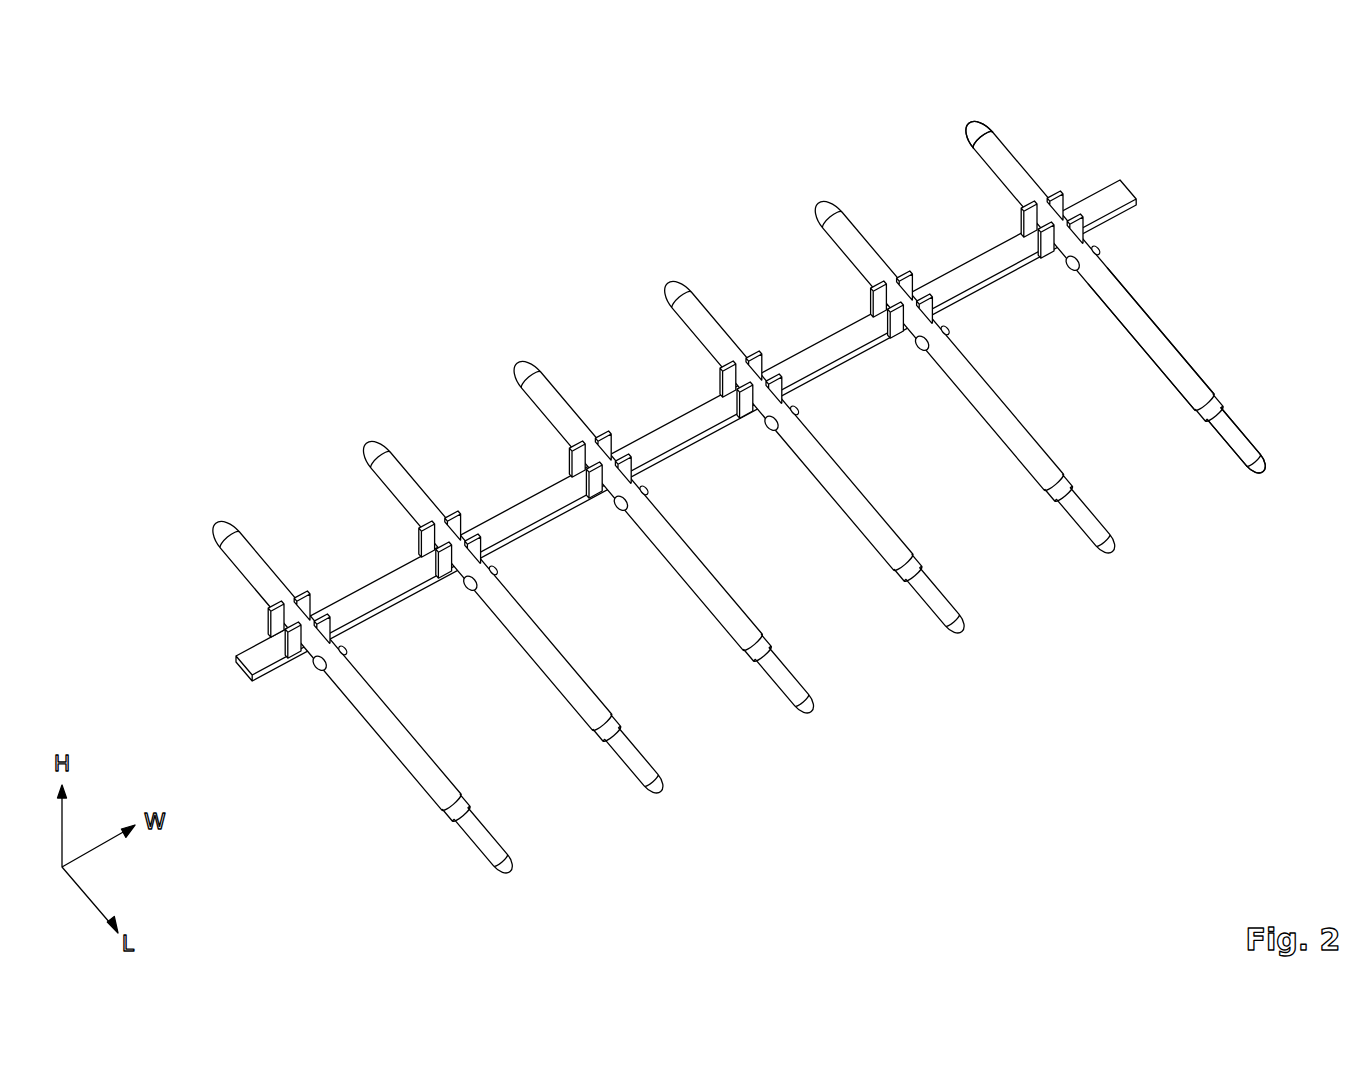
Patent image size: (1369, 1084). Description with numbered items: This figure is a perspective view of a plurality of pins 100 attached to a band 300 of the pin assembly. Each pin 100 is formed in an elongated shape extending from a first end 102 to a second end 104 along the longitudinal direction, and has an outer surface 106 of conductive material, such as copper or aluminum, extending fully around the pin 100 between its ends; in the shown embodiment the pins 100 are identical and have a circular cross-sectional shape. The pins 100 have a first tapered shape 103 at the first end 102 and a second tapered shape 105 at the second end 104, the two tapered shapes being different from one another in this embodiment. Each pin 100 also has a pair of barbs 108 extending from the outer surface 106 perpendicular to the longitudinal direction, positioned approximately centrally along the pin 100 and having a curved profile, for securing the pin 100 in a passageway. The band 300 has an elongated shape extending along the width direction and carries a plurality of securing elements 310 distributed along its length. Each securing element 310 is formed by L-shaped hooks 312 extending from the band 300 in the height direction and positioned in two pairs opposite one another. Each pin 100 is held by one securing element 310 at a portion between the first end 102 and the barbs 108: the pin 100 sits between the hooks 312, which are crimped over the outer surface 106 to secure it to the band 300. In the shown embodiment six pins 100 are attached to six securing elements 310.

The pin 100 is at (194, 528).
The first end 102 is at (979, 118).
The first tapered shape 103 is at (984, 126).
The second end 104 is at (1260, 468).
The second tapered shape 105 is at (1241, 420).
The outer surface 106 is at (1155, 310).
The barb 108 is at (1097, 243).
The band 300 is at (257, 660).
The securing element 310 is at (352, 637).
The hook 312 is at (318, 612).